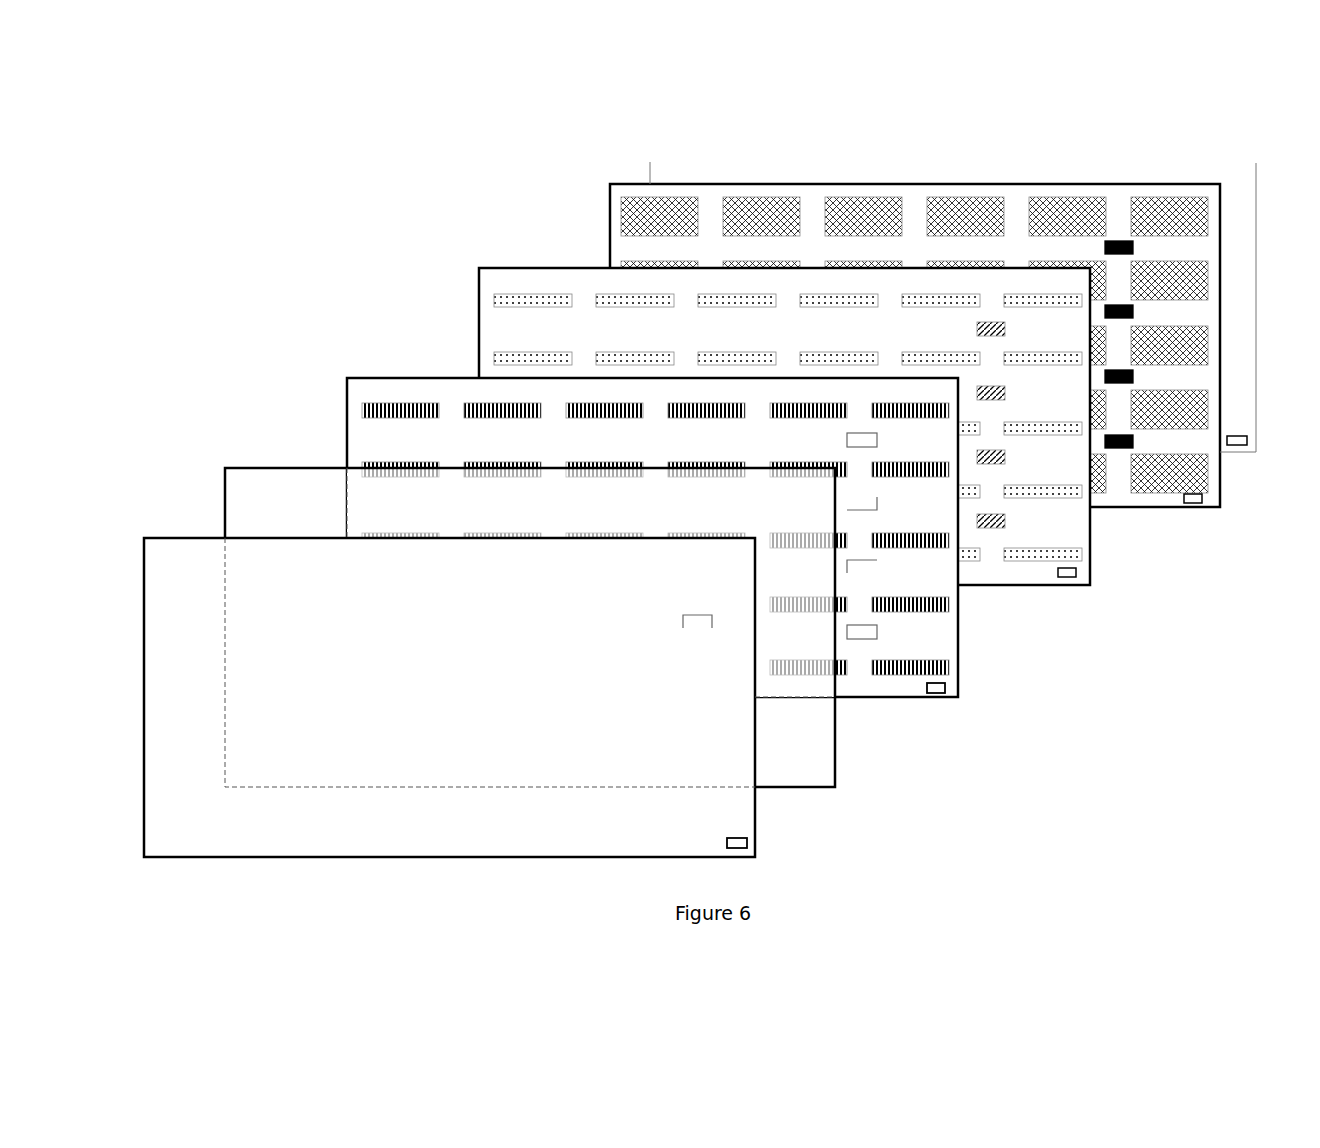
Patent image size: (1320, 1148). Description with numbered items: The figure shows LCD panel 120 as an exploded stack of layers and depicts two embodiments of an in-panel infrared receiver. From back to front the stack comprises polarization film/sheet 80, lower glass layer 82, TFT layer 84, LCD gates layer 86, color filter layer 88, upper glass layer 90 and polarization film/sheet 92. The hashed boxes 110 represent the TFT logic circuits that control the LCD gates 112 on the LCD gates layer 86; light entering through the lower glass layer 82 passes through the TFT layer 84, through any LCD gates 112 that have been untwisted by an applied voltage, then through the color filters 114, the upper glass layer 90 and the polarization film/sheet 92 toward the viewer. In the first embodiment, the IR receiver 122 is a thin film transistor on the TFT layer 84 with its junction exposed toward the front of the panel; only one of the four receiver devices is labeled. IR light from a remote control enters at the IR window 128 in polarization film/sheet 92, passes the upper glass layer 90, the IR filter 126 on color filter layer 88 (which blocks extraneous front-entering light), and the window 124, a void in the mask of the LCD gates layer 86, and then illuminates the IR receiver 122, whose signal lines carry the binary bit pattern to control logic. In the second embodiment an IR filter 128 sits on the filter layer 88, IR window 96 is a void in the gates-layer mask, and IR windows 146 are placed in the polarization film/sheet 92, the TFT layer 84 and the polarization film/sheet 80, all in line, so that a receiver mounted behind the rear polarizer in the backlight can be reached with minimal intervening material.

The LCD panel 120 is at (521, 133).
The polarization film/sheet 80 is at (723, 160).
The lower glass layer 82 is at (894, 327).
The TFT layer 84 is at (608, 222).
The LCD gates layer 86 is at (477, 327).
The color filter layer 88 is at (345, 415).
The upper glass layer 90 is at (838, 734).
The polarization film/sheet 92 is at (203, 537).
The IR receiver 122 is at (1119, 240).
The window 124 is at (975, 328).
The IR filter 126 is at (845, 440).
The IR window 128 is at (680, 620).
The IR window 146 is at (751, 843).
The IR window 96 is at (1080, 572).
The hashed boxes 110 is at (1152, 494).
The LCD gates 112 is at (1035, 567).
The color filters 114 is at (952, 666).